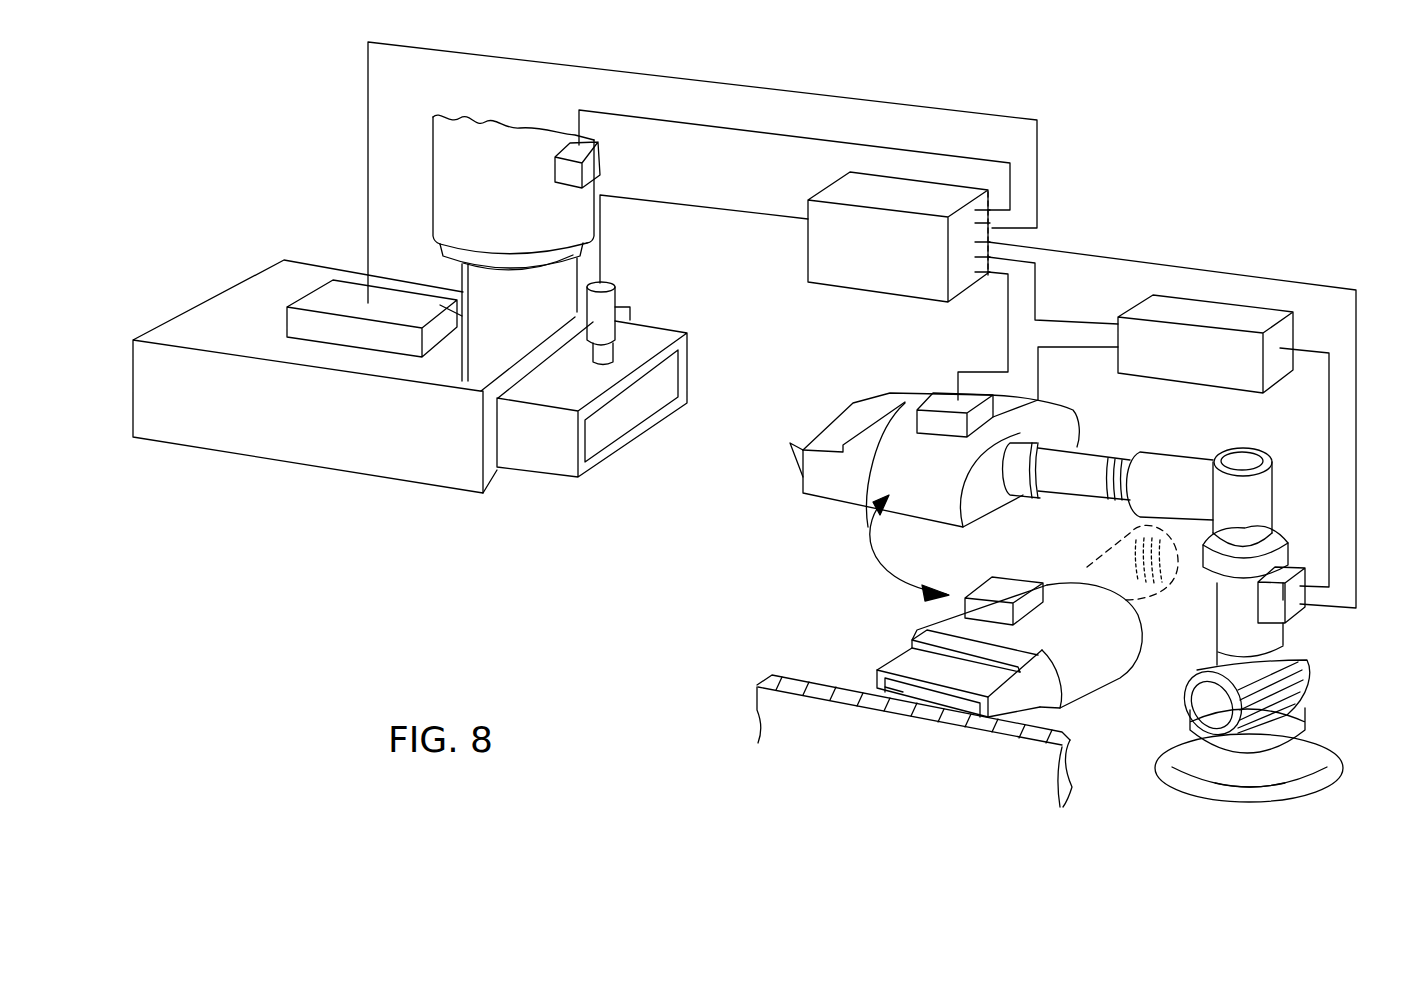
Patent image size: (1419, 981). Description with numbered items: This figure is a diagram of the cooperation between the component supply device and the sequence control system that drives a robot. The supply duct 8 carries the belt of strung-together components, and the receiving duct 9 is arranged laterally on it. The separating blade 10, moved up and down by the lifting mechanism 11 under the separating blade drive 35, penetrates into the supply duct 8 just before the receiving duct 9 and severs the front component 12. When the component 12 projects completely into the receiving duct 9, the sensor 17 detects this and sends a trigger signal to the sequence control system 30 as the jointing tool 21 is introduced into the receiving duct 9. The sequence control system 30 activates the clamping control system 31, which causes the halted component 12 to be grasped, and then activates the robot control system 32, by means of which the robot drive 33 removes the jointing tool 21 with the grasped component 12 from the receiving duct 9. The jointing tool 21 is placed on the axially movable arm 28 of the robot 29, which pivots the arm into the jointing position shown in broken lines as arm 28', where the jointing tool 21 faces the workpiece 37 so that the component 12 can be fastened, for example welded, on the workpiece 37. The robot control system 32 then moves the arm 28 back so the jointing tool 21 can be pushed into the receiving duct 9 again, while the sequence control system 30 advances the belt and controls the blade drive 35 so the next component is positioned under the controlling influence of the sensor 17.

The supply duct 8 is at (173, 425).
The receiving duct 9 is at (557, 453).
The separating blade 10 is at (490, 340).
The lifting mechanism 11 is at (478, 143).
The component 12 is at (812, 435).
The sensor 17 is at (607, 308).
The jointing tool 21 is at (840, 485).
The arm 28 is at (1108, 456).
The arm in jointing position 28' is at (1105, 555).
The robot 29 is at (1262, 633).
The sequence control system 30 is at (835, 270).
The clamping control system 31 is at (950, 397).
The robot control system 32 is at (1208, 313).
The robot drive 33 is at (1293, 617).
The separating blade drive 35 is at (567, 153).
The workpiece 37 is at (760, 707).